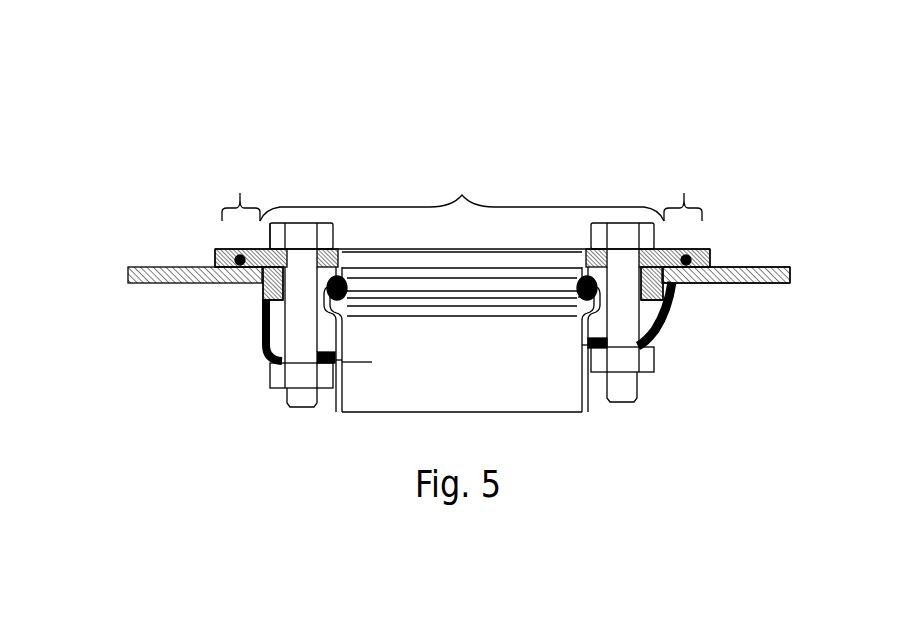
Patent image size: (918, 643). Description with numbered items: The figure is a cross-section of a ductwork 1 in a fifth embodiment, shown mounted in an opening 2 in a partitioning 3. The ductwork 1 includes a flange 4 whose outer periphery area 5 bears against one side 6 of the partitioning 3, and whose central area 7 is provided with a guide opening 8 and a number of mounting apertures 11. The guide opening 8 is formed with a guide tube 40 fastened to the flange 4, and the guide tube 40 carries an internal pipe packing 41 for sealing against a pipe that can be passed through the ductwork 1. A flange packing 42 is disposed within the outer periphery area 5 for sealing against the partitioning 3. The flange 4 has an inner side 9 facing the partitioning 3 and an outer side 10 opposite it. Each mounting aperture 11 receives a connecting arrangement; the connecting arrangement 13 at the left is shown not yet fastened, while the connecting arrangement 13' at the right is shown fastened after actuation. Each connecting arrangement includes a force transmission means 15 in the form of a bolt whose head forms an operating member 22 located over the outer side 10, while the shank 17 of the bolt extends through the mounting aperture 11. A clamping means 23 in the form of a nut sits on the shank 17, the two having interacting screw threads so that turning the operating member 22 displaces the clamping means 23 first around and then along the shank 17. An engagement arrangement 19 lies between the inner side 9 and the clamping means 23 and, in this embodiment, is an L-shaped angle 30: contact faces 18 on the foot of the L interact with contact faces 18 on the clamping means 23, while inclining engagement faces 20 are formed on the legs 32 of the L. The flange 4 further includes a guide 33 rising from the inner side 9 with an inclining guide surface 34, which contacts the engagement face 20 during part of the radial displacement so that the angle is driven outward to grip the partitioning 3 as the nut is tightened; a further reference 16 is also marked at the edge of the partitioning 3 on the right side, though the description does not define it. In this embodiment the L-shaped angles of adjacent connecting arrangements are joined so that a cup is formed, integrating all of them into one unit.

The ductwork 1 is at (330, 115).
The opening 2 is at (452, 105).
The partitioning 3 is at (104, 276).
The flange 4 is at (206, 243).
The outer periphery area 5 is at (462, 190).
The side of the partitioning 6 is at (767, 263).
The central area 7 is at (462, 194).
The guide opening 8 is at (506, 140).
The inner side 9 is at (703, 270).
The outer side 10 is at (708, 245).
The mounting aperture 11 is at (262, 337).
The connecting arrangement 13 is at (248, 425).
The connecting arrangement 13' is at (681, 430).
The force transmission means 15 is at (297, 327).
The panel edge 16 is at (784, 287).
The shank 17 is at (463, 283).
The contact faces 18 is at (262, 302).
The engagement arrangement 19 is at (249, 330).
The engagement faces 20 is at (705, 254).
The operating member 22 is at (266, 238).
The clamping means 23 is at (303, 375).
The L-shaped angle 30 is at (336, 360).
The legs 32 is at (262, 300).
The guide 33 is at (262, 293).
The guide surface 34 is at (663, 307).
The guide tube 40 is at (372, 362).
The pipe packing 41 is at (582, 297).
The flange packing 42 is at (217, 263).